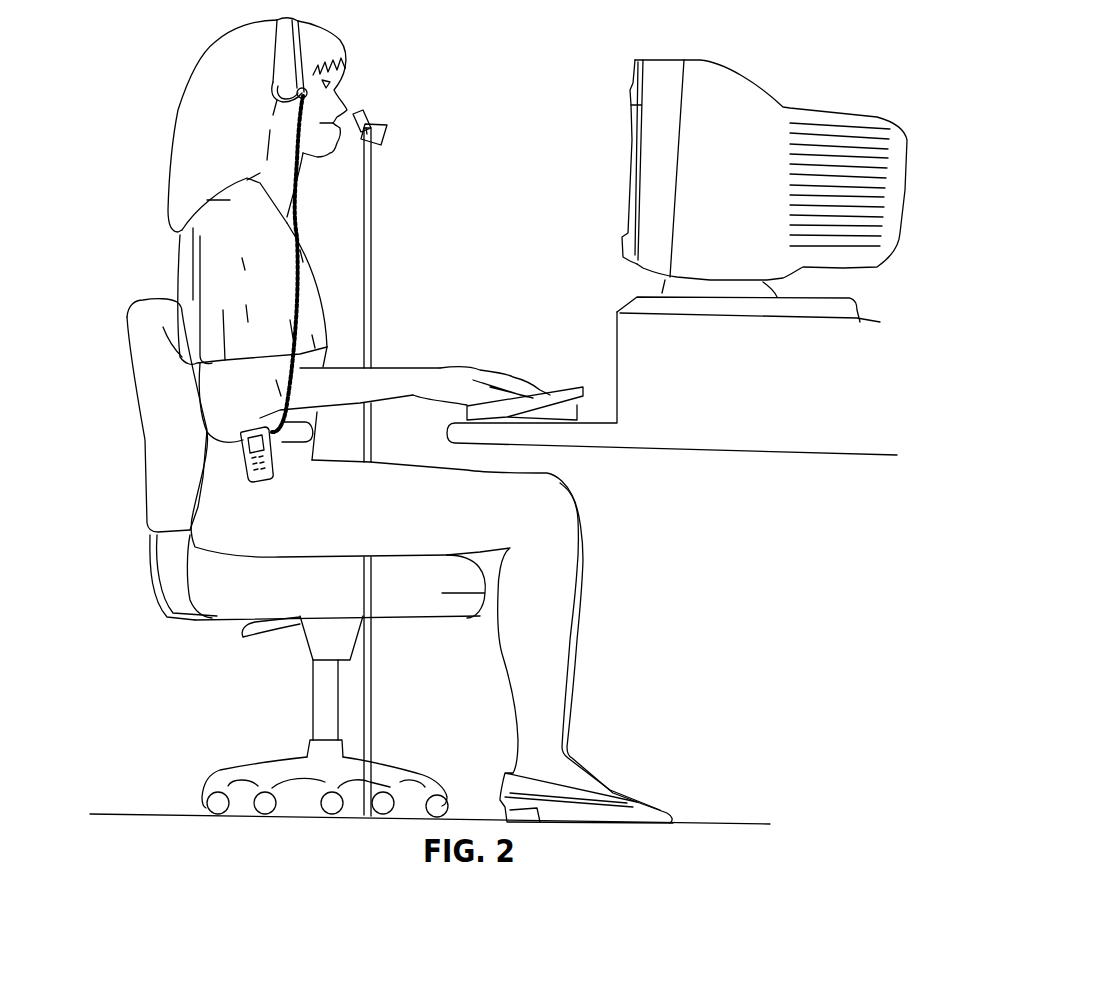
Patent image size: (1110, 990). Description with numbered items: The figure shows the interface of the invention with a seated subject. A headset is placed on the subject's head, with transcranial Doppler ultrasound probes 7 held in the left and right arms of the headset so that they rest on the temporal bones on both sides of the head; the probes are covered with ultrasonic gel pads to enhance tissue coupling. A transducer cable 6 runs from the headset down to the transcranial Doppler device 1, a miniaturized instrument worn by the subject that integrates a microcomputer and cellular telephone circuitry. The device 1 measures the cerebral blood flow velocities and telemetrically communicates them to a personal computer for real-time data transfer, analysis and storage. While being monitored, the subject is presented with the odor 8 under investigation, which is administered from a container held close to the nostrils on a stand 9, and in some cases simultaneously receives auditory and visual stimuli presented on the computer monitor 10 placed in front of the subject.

The transcranial Doppler device 1 is at (240, 435).
The transducer cable 6 is at (300, 217).
The transcranial Doppler ultrasound probes 7 is at (272, 82).
The odor 8 is at (393, 123).
The microphone stand 9 is at (373, 277).
The computer monitor 10 is at (642, 105).